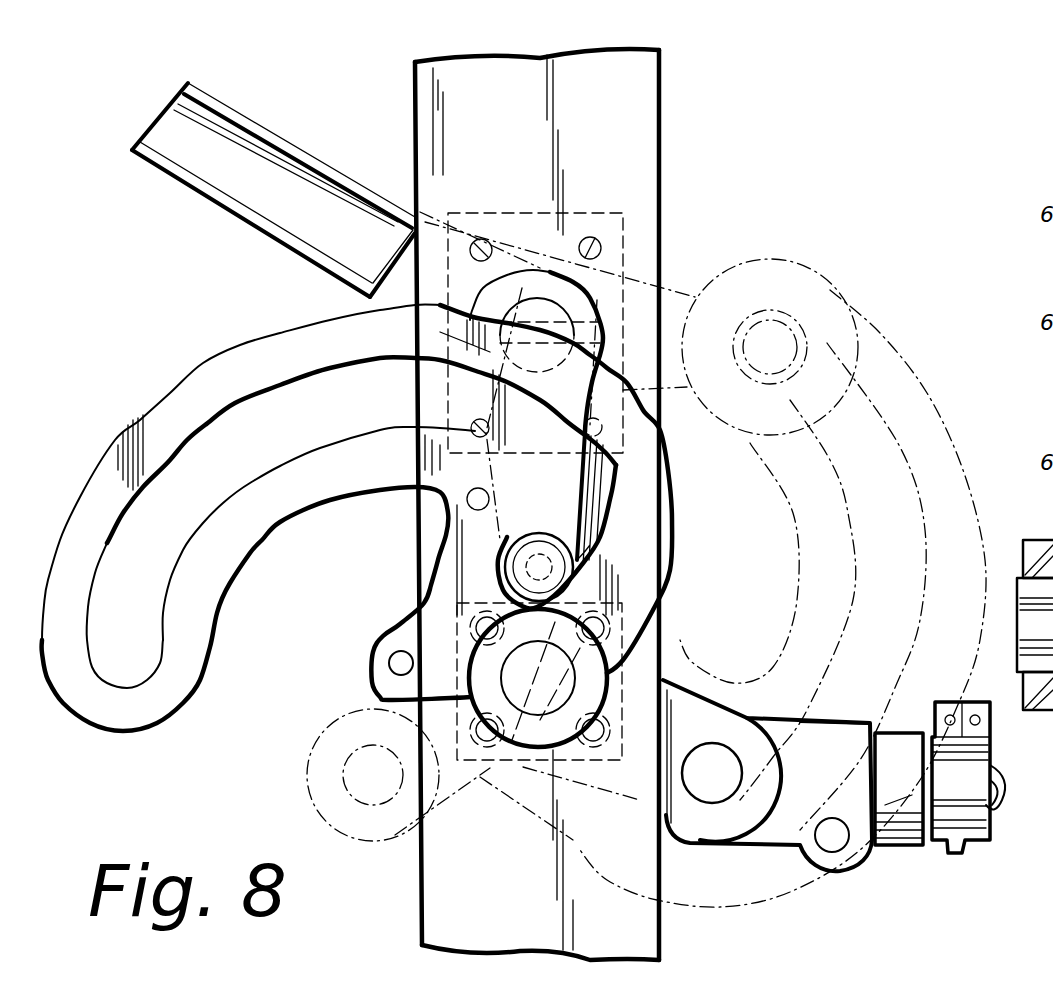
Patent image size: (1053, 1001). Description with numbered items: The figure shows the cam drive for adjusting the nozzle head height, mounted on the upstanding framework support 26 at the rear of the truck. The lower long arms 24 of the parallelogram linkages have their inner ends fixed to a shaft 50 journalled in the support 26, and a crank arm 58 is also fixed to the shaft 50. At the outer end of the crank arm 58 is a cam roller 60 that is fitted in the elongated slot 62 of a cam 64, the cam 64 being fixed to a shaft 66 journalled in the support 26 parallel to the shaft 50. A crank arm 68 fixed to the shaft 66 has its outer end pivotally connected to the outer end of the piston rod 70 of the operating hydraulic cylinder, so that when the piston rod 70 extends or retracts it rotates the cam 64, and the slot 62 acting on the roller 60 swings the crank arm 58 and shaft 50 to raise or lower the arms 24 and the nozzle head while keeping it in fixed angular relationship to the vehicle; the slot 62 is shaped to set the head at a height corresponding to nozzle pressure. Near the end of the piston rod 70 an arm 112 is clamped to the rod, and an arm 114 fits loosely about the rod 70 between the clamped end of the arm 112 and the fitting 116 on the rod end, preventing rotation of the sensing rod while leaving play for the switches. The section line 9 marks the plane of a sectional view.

The section line 9- 9 is at (541, 892).
The long parallel arm 24 is at (312, 137).
The upstanding framework support 26 is at (672, 160).
The shaft 50 is at (548, 298).
The crank arm 58 is at (480, 390).
The cam roller 60 is at (543, 532).
The elongated slot 62 is at (214, 506).
The cam 64 is at (212, 362).
The shaft 66 is at (500, 668).
The crank arm 68 is at (685, 678).
The piston rod 70 is at (998, 762).
The arm 112 is at (956, 848).
The arm 114 is at (910, 846).
The fitting 116 is at (827, 728).